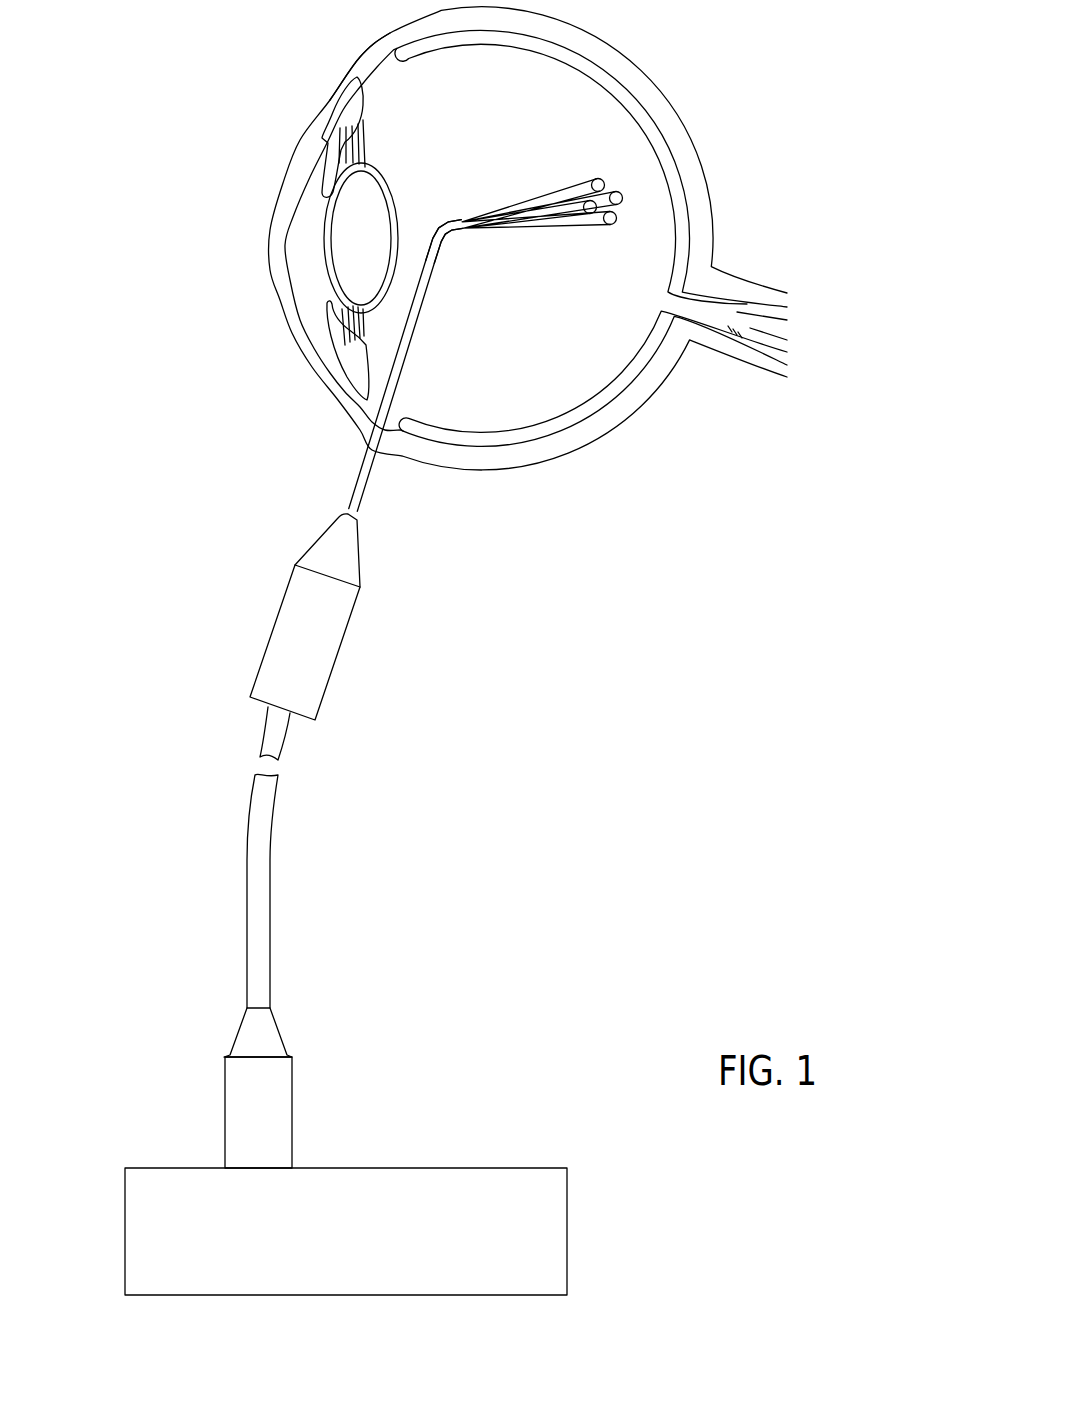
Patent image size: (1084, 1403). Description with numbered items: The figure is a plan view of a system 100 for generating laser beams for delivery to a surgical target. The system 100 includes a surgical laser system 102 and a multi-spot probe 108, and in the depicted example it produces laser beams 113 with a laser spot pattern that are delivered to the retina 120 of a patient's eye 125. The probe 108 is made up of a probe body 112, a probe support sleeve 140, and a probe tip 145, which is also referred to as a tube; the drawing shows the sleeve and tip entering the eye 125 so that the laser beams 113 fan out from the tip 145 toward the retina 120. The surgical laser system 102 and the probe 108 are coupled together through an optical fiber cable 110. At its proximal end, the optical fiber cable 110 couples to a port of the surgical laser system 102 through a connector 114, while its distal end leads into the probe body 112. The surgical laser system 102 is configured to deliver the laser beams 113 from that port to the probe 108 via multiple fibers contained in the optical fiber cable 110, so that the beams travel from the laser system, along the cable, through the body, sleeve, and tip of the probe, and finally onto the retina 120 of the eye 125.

The system 100 is at (128, 818).
The surgical laser system 102 is at (546, 1228).
The multi-spot probe 108 is at (336, 637).
The optical fiber cable 110 is at (252, 810).
The probe body 112 is at (268, 652).
The laser beams 113 is at (527, 200).
The connector 114 is at (225, 1085).
The retina 120 is at (628, 368).
The eye 125 is at (351, 52).
The probe support sleeve 140 is at (402, 373).
The probe tip 145 is at (430, 290).